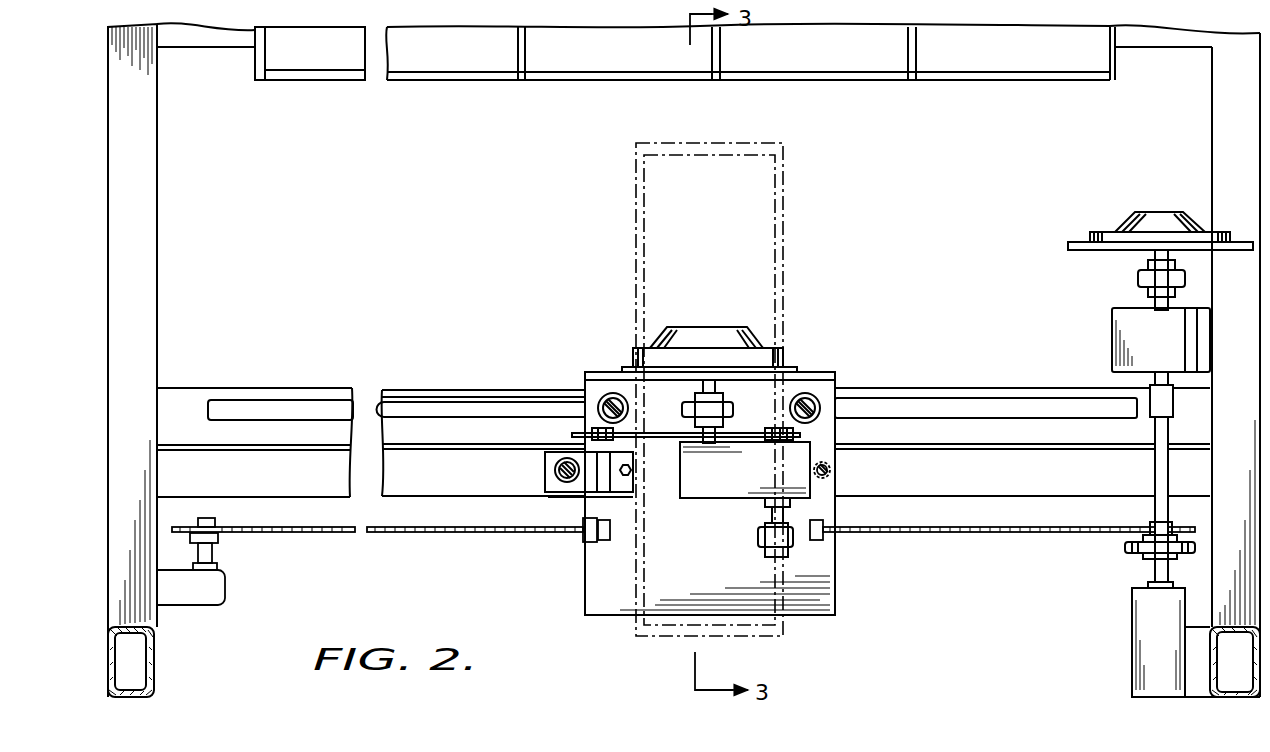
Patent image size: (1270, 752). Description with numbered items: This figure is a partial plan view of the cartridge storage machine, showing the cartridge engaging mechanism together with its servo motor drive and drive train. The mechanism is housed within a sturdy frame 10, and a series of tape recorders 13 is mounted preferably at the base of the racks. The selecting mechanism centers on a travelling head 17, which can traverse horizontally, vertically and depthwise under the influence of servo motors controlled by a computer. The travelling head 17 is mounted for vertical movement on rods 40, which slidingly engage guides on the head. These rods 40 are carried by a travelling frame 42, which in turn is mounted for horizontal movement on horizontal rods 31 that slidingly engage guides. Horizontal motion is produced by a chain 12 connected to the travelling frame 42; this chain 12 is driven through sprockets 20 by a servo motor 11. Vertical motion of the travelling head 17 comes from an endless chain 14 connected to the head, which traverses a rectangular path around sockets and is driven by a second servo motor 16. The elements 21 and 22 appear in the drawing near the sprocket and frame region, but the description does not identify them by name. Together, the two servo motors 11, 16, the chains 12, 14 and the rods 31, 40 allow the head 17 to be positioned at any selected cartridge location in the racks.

The frame 10 is at (190, 350).
The servo motor 11 is at (1160, 224).
The chain 12 is at (411, 534).
The tape recorders 13 is at (540, 100).
The endless chain 14 is at (575, 433).
The servo motor 16 is at (698, 342).
The travelling head 17 is at (789, 294).
The sprockets 20 is at (1142, 557).
The washer nut 21 is at (1128, 546).
The screw 22 is at (835, 468).
The horizontal rods 31 is at (449, 412).
The rods 40 is at (611, 396).
The travelling frame 42 is at (835, 595).